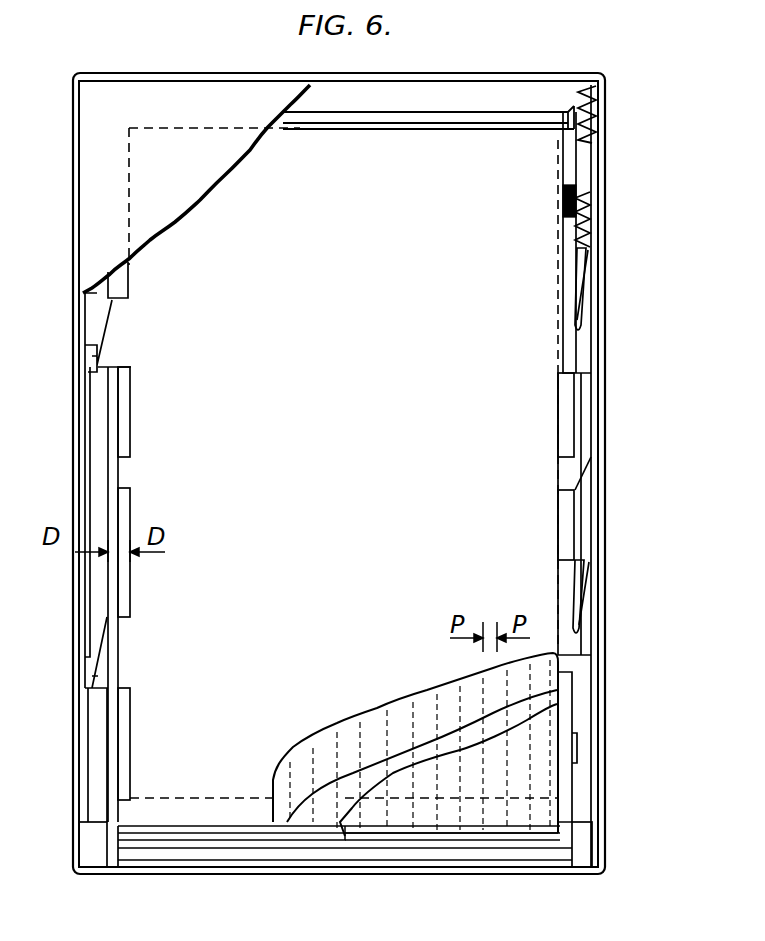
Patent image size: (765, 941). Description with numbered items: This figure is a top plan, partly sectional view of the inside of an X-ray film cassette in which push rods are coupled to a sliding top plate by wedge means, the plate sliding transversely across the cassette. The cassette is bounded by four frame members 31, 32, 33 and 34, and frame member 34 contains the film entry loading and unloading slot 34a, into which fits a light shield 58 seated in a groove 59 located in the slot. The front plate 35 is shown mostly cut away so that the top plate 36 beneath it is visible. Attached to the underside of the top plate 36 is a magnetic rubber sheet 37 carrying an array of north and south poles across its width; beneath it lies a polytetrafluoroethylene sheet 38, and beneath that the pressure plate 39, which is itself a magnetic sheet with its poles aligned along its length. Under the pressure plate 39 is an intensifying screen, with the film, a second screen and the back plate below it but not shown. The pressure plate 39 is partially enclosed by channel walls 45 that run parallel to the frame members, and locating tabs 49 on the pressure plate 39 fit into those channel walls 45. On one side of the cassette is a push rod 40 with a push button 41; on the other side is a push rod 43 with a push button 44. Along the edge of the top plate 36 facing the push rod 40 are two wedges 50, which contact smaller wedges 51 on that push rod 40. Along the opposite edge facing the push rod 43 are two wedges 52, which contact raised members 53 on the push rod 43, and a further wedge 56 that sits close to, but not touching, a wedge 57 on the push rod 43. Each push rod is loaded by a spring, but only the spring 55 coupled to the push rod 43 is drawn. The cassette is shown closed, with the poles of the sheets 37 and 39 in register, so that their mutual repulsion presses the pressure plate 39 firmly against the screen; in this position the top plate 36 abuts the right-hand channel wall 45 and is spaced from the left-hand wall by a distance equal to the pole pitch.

The frame member 31 is at (603, 102).
The frame member 32 is at (204, 75).
The frame member 33 is at (76, 134).
The frame member 34 is at (548, 868).
The film entry loading and unloading slot 34a is at (240, 868).
The front plate 35 is at (218, 187).
The top plate 36 is at (356, 208).
The magnetic rubber sheet 37 is at (404, 702).
The polytetrafluoroethylene sheet 38 is at (347, 758).
The pressure plate 39 is at (480, 838).
The push rod 40 is at (85, 425).
The push button 41 is at (90, 850).
The push rod 43 is at (576, 400).
The push button 44 is at (588, 860).
The channel walls 45 is at (357, 121).
The locating tabs 49 is at (113, 472).
The wedges 50 is at (118, 330).
The smaller wedges 51 is at (92, 356).
The wedges 52 is at (584, 265).
The raised members 53 is at (577, 296).
The spring 55 is at (580, 205).
The wedge 56 is at (576, 476).
The wedge 57 is at (577, 517).
The light shield 58 is at (335, 850).
The groove 59 is at (388, 855).